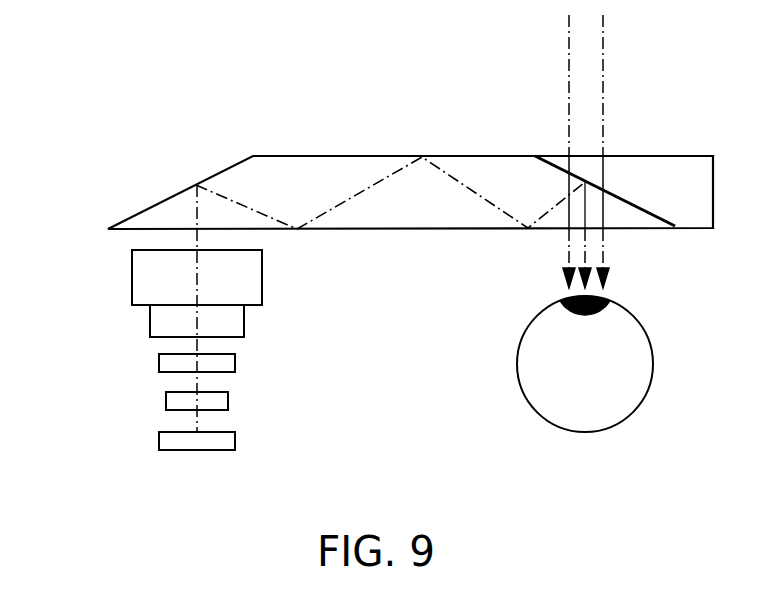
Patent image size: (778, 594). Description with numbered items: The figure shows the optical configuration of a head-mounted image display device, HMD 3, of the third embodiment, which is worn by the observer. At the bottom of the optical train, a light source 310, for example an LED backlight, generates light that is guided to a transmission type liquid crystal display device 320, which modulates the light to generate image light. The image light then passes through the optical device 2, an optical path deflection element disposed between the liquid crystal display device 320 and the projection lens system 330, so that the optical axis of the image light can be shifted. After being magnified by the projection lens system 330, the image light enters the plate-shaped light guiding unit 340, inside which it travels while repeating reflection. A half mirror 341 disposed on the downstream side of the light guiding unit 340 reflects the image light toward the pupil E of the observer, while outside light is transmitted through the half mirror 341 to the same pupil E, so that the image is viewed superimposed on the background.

The image display device (HMD) 3 is at (226, 111).
The light guiding unit 340 is at (339, 156).
The half mirror 341 is at (635, 202).
The projection lens system 330 is at (132, 275).
The optical device 2 is at (159, 361).
The liquid crystal display device 320 is at (166, 398).
The light source 310 is at (159, 440).
The pupil E is at (568, 408).